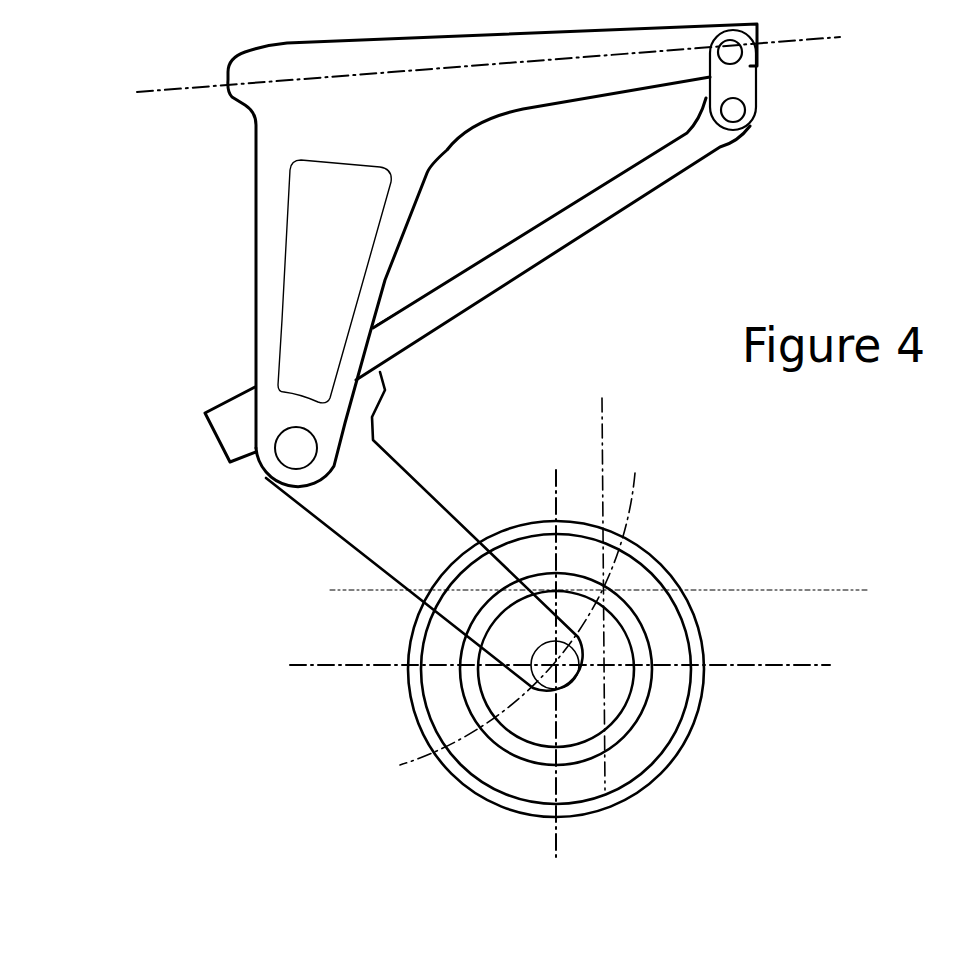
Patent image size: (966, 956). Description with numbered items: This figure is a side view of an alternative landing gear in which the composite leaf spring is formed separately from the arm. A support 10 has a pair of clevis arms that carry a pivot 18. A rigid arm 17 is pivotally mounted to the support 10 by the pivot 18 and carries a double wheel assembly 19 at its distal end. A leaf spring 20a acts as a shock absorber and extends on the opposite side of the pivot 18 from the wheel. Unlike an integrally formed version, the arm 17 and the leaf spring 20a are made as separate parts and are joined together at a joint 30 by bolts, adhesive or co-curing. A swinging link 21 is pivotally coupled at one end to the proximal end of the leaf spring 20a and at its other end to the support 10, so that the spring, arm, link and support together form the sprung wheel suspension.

The support 10 is at (277, 146).
The swinging link 21 is at (733, 78).
The leaf spring 20a is at (472, 293).
The pivot 18 is at (293, 447).
The rigid arm 17 is at (333, 515).
The joint 30 is at (232, 462).
The double wheel assembly 19 is at (675, 637).